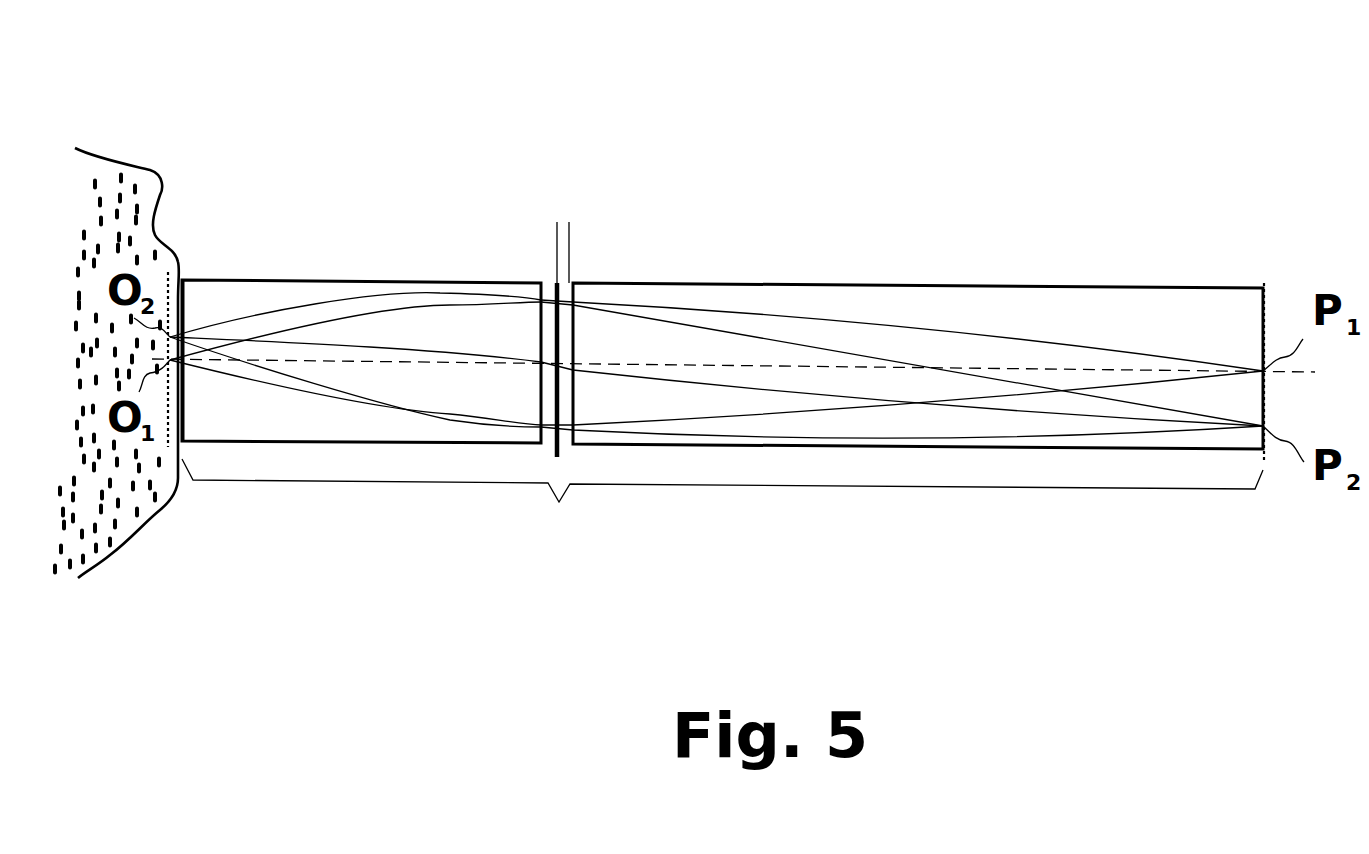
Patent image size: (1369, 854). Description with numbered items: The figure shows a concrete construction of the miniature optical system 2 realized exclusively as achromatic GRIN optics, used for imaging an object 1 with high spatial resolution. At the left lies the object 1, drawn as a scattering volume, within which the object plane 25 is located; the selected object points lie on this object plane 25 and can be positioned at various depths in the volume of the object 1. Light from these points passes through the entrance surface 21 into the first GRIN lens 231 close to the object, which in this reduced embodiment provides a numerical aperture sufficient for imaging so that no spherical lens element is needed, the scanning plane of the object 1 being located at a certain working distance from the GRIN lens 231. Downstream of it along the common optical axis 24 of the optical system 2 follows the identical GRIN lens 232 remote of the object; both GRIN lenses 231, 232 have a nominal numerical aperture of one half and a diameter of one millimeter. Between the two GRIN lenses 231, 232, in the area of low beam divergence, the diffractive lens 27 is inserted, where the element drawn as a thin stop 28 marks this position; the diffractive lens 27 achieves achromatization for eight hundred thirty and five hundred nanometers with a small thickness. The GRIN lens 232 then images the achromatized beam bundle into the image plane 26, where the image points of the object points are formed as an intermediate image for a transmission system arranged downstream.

The object 1 is at (109, 168).
The miniature optical system 2 is at (559, 507).
The entrance surface 21 is at (190, 286).
The first GRIN lens 231 is at (358, 287).
The GRIN lens remote of the object 232 is at (937, 288).
The optical axis 24 is at (981, 368).
The object plane 25 is at (172, 500).
The image plane 26 is at (1266, 287).
The diffractive lens 27 is at (569, 226).
The aperture stop 28 is at (547, 283).